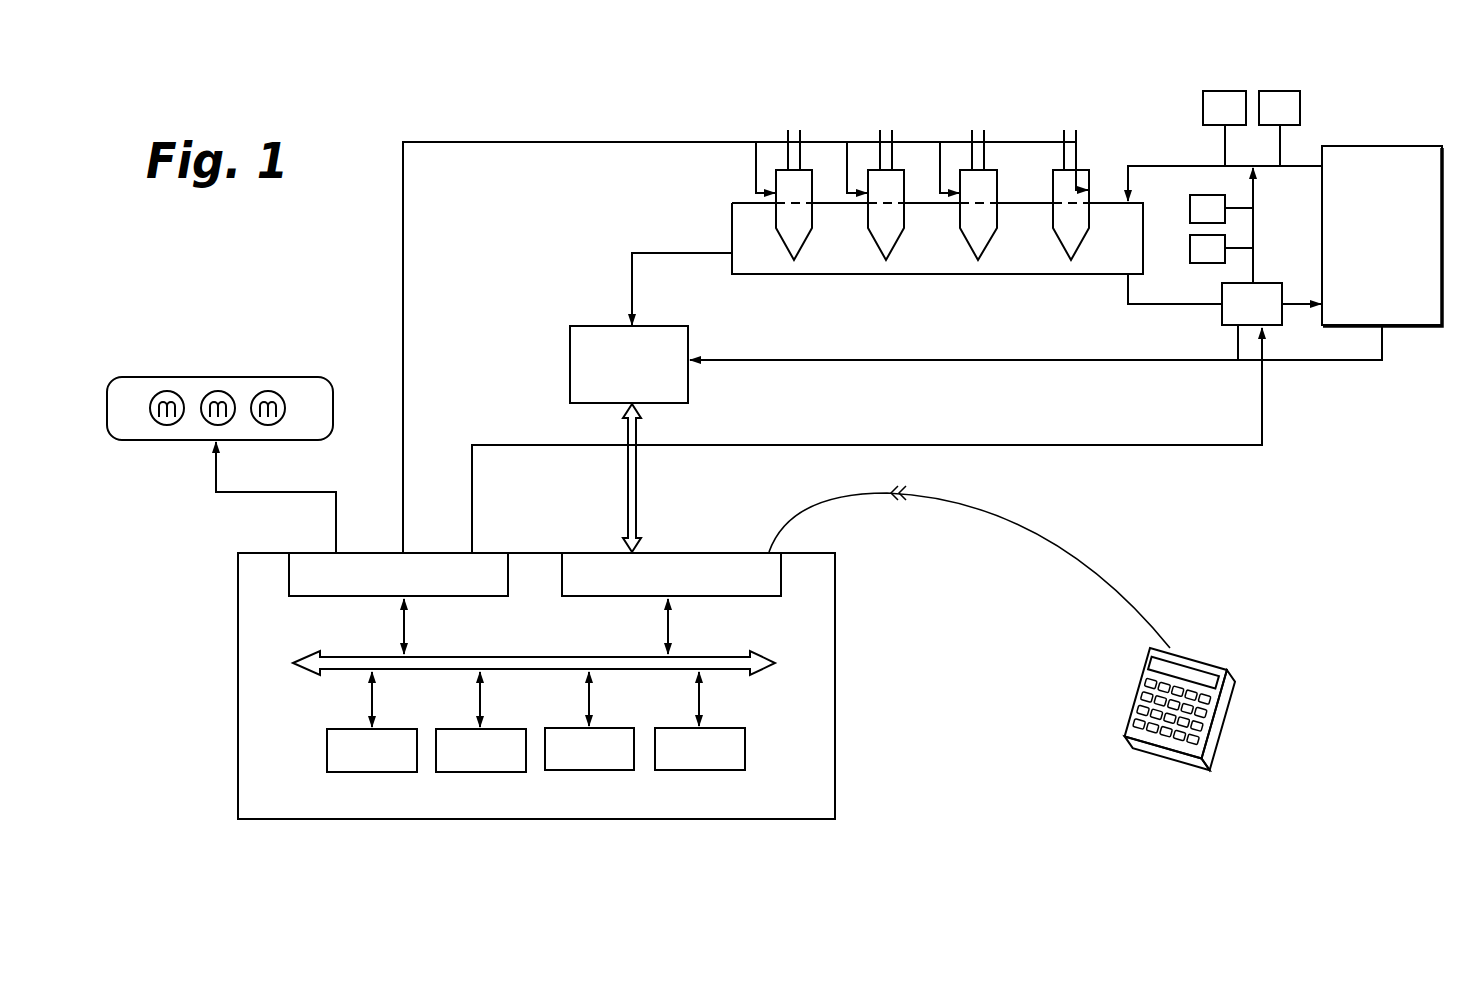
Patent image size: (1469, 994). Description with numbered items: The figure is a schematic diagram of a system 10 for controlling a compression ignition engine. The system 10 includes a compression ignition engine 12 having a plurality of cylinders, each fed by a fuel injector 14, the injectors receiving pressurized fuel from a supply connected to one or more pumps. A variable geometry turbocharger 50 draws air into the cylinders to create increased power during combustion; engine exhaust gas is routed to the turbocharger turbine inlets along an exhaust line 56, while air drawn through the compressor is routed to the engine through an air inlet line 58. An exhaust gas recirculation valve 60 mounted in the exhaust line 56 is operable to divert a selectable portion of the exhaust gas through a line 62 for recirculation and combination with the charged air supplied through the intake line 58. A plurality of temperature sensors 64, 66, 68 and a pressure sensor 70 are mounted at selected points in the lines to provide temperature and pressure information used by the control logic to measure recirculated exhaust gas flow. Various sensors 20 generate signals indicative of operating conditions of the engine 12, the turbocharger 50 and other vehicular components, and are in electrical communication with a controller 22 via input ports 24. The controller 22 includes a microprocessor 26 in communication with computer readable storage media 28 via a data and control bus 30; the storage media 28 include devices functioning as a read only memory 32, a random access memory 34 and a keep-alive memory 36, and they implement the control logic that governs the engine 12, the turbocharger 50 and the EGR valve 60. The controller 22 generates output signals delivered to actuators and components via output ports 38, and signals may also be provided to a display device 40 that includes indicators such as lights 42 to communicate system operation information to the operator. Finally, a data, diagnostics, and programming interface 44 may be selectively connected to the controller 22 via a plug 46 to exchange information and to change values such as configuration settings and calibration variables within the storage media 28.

The system 10 is at (1348, 408).
The compression ignition engine 12 is at (732, 218).
The fuel injector 14 is at (1091, 188).
The sensors 20 is at (595, 326).
The controller 22 is at (835, 700).
The input ports 24 is at (737, 598).
The microprocessor 26 is at (347, 729).
The computer readable storage media 28 is at (457, 776).
The data and control bus 30 is at (553, 657).
The read only memory (ROM) 32 is at (565, 728).
The random access memory (RAM) 34 is at (672, 728).
The keep-alive memory (KAM) 36 is at (456, 729).
The output ports 38 is at (320, 598).
The display device 40 is at (170, 440).
The lights 42 is at (197, 379).
The data, diagnostics, and programming interface 44 is at (1230, 718).
The plug 46 is at (902, 514).
The variable geometry turbocharger 50 is at (1410, 325).
The exhaust line 56 is at (1128, 290).
The air inlet line 58 is at (1143, 166).
The exhaust gas recirculation (EGR) valve 60 is at (1222, 318).
The EGR line 62 is at (1253, 232).
The temperature sensor 64 is at (1225, 91).
The temperature sensor 66 is at (1280, 91).
The temperature sensor 68 is at (1190, 205).
The pressure sensor 70 is at (1190, 250).